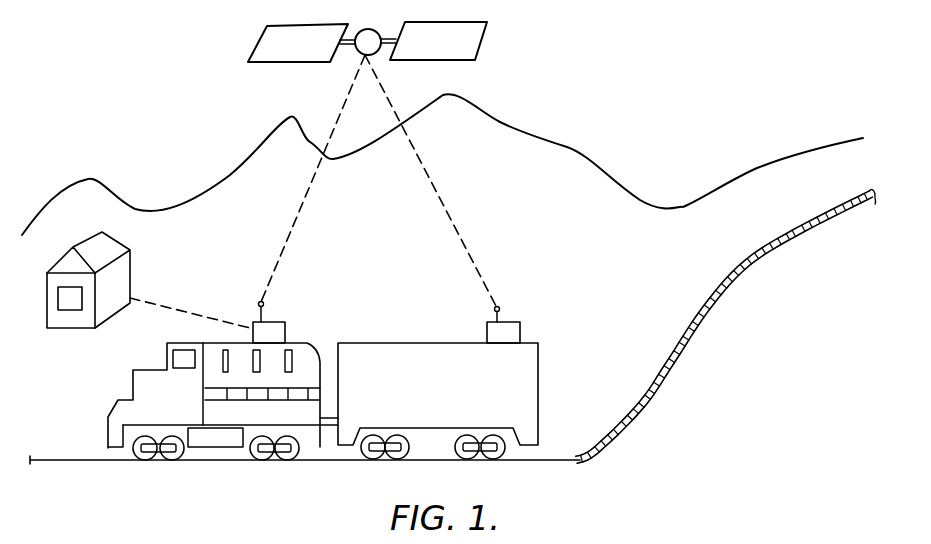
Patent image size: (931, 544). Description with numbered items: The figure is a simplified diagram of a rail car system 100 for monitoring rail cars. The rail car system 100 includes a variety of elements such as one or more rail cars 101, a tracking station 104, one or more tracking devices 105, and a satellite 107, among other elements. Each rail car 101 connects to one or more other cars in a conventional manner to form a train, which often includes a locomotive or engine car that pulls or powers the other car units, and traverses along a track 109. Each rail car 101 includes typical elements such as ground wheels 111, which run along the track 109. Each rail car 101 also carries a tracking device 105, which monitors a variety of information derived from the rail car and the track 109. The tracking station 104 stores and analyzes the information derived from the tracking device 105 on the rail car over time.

The rail car system 100 is at (714, 28).
The rail car 101 is at (305, 357).
The tracking station 104 is at (122, 272).
The tracking device 105 is at (275, 322).
The satellite 107 is at (460, 52).
The track 109 is at (667, 363).
The ground wheels 111 is at (498, 460).